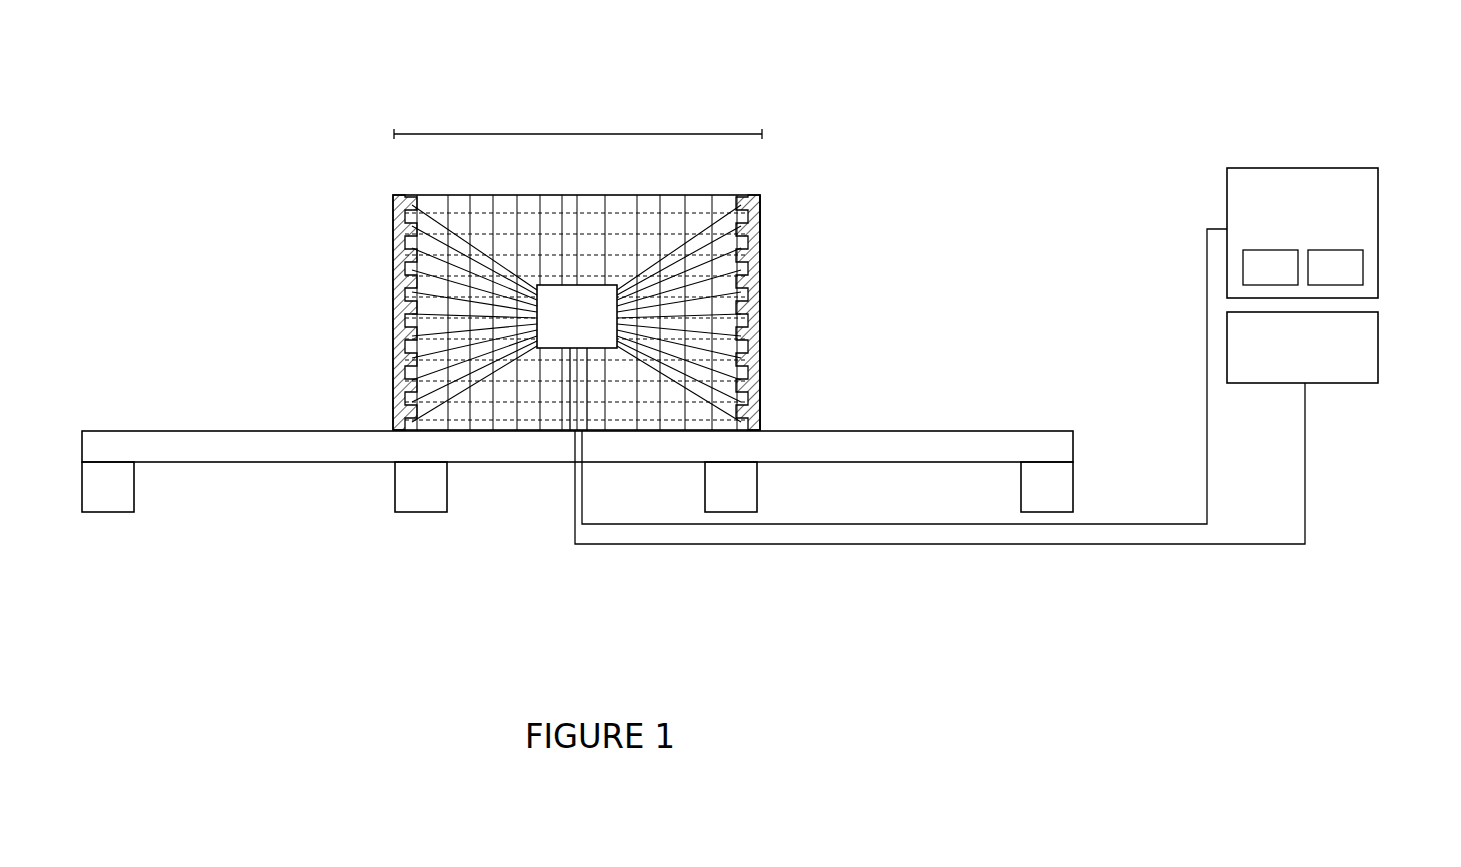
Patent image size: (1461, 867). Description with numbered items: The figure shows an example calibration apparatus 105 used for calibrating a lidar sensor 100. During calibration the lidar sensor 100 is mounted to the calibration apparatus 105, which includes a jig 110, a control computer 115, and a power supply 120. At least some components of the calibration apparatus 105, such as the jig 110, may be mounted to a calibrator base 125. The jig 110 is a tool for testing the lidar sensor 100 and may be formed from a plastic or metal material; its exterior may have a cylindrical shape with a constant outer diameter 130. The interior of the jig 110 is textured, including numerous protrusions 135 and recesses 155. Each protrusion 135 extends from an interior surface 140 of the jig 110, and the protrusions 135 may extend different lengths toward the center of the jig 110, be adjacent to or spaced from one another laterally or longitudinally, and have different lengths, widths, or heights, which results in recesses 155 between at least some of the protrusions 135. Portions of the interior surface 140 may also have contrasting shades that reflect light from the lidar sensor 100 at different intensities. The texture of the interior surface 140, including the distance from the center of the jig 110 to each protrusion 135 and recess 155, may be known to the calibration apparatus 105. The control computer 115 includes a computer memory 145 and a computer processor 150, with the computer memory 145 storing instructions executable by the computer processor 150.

The lidar sensor 100 is at (577, 285).
The calibration apparatus 105 is at (767, 92).
The jig 110 is at (762, 290).
The control computer 115 is at (1378, 233).
The power supply 120 is at (1378, 345).
The calibrator base 125 is at (850, 430).
The outer diameter 130 is at (611, 134).
The protrusions 135 is at (426, 225).
The interior surface 140 is at (434, 297).
The computer memory 145 is at (1270, 267).
The computer processor 150 is at (1335, 267).
The recesses 155 is at (429, 381).